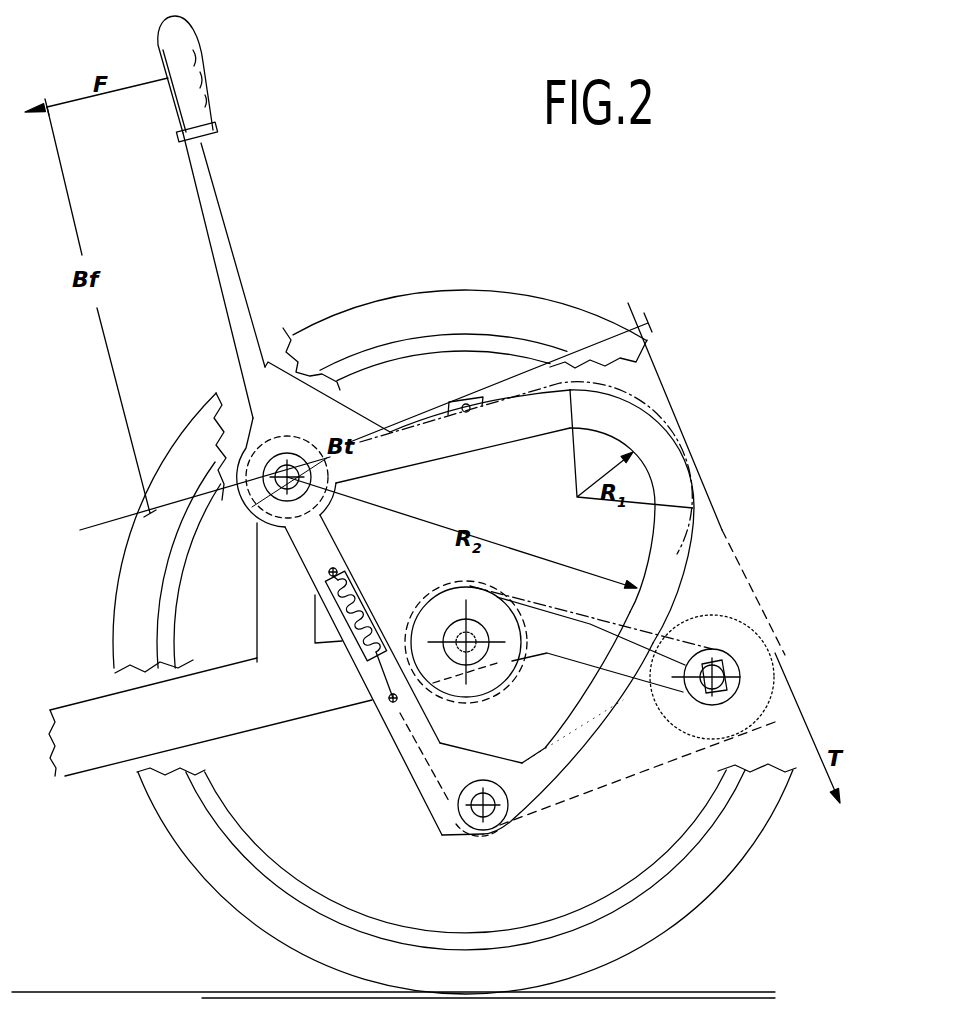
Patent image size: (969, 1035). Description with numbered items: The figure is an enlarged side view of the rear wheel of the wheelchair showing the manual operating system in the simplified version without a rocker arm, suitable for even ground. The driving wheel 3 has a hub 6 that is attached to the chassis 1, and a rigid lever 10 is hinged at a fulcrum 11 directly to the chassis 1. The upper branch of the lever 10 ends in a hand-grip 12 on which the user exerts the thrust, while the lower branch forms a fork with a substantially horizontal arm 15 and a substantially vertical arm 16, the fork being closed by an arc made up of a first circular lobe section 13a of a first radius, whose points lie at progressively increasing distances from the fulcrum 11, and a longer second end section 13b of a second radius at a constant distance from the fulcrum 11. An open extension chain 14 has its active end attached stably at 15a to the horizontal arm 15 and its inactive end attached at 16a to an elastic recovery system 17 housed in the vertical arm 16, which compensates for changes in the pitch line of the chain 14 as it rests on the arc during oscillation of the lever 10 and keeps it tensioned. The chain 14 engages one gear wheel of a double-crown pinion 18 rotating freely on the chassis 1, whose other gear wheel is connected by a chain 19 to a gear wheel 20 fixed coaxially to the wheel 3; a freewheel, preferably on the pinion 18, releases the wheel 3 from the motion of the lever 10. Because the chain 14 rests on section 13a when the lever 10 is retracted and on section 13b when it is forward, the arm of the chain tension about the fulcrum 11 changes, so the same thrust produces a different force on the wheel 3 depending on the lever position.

The chassis 1 is at (108, 762).
The driving wheel 3 is at (562, 323).
The hub 6 is at (458, 652).
The rigid lever 10 is at (297, 425).
The fulcrum 11 is at (252, 507).
The hand-grip 12 is at (193, 58).
The first circular lobe section 13a is at (665, 453).
The second end section 13b is at (573, 743).
The open extension chain 14 is at (730, 540).
The horizontal arm 15 is at (518, 432).
The chain attachment point 15a is at (463, 420).
The vertical arm 16 is at (415, 768).
The chain attachment point 16a is at (390, 712).
The elastic recovery system 17 is at (362, 597).
The pinion 18 is at (753, 657).
The chain 19 is at (555, 712).
The gear wheel 20 is at (498, 675).